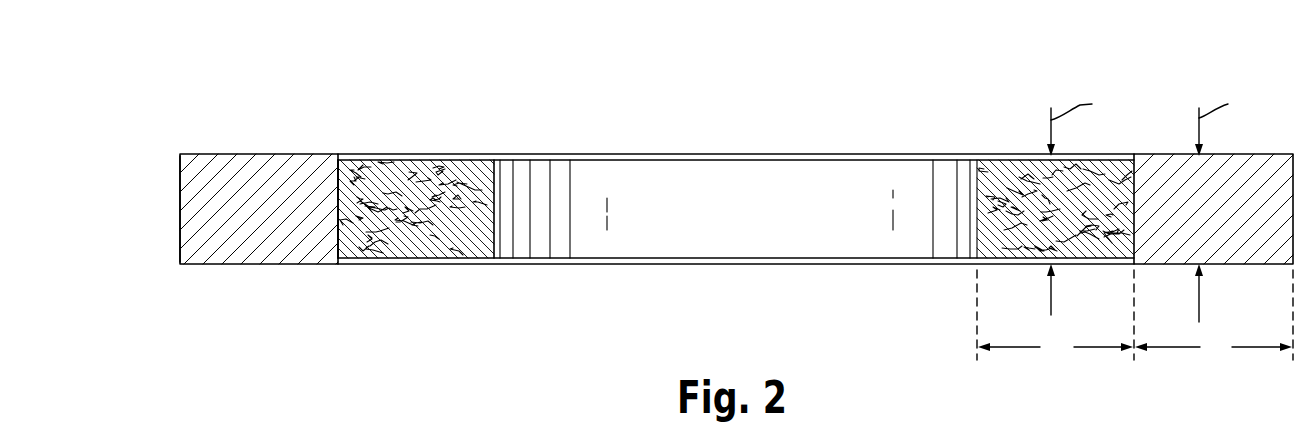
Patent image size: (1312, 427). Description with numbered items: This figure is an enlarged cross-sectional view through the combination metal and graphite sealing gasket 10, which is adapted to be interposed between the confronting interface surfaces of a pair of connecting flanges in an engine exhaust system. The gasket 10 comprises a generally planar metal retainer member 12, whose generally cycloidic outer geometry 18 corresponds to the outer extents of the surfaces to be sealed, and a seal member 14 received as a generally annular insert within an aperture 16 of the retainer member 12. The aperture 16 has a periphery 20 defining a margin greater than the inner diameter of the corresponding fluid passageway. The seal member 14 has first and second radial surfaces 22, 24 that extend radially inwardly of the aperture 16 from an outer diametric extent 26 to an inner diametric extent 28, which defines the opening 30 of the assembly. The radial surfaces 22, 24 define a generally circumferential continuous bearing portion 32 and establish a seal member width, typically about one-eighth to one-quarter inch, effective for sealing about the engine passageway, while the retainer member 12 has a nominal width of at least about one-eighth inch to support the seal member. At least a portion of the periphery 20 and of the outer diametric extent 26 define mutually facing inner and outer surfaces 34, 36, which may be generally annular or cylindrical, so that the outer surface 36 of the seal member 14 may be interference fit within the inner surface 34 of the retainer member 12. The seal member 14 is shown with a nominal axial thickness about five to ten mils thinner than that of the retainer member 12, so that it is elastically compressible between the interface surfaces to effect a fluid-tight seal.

The gasket 10 is at (954, 72).
The retainer member 12 is at (271, 154).
The seal member 14 is at (392, 192).
The aperture 16 is at (343, 150).
The outer geometry 18 is at (180, 208).
The periphery 20 is at (352, 263).
The first radial surface 22 is at (437, 160).
The second radial surface 24 is at (462, 263).
The outer diametric extent 26 is at (338, 225).
The inner diametric extent 28 is at (497, 213).
The opening 30 is at (735, 226).
The bearing portion 32 is at (481, 150).
The inner surface 34 is at (340, 197).
The outer surface 36 is at (338, 187).